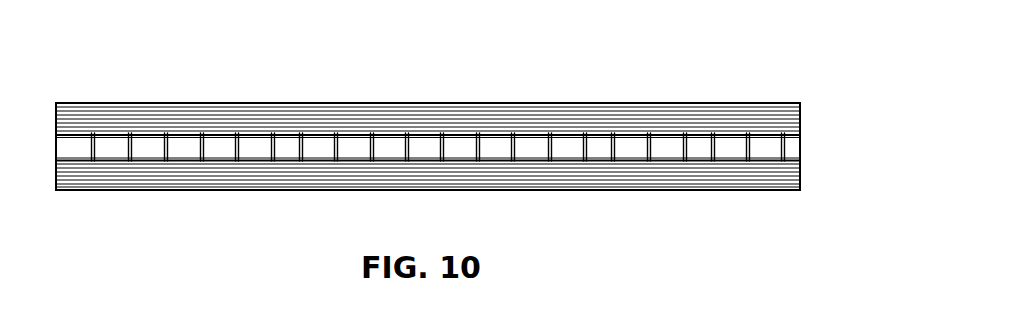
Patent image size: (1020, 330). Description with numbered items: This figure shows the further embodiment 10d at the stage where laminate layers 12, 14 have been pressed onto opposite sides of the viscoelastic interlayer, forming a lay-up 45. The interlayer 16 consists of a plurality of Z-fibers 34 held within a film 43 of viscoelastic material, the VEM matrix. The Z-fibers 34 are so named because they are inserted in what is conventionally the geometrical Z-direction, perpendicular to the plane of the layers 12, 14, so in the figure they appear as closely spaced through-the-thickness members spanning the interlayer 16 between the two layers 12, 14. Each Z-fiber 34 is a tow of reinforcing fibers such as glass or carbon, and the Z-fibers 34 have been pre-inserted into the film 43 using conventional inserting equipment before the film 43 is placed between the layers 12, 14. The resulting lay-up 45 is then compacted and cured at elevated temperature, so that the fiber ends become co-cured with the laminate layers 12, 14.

The further embodiment 10d is at (698, 88).
The laminate layer 12 is at (95, 122).
The laminate layer 14 is at (227, 190).
The interlayer 16 is at (804, 137).
The Z-fibers 34 is at (88, 147).
The VEM film 43 is at (255, 143).
The lay-up 45 is at (573, 63).